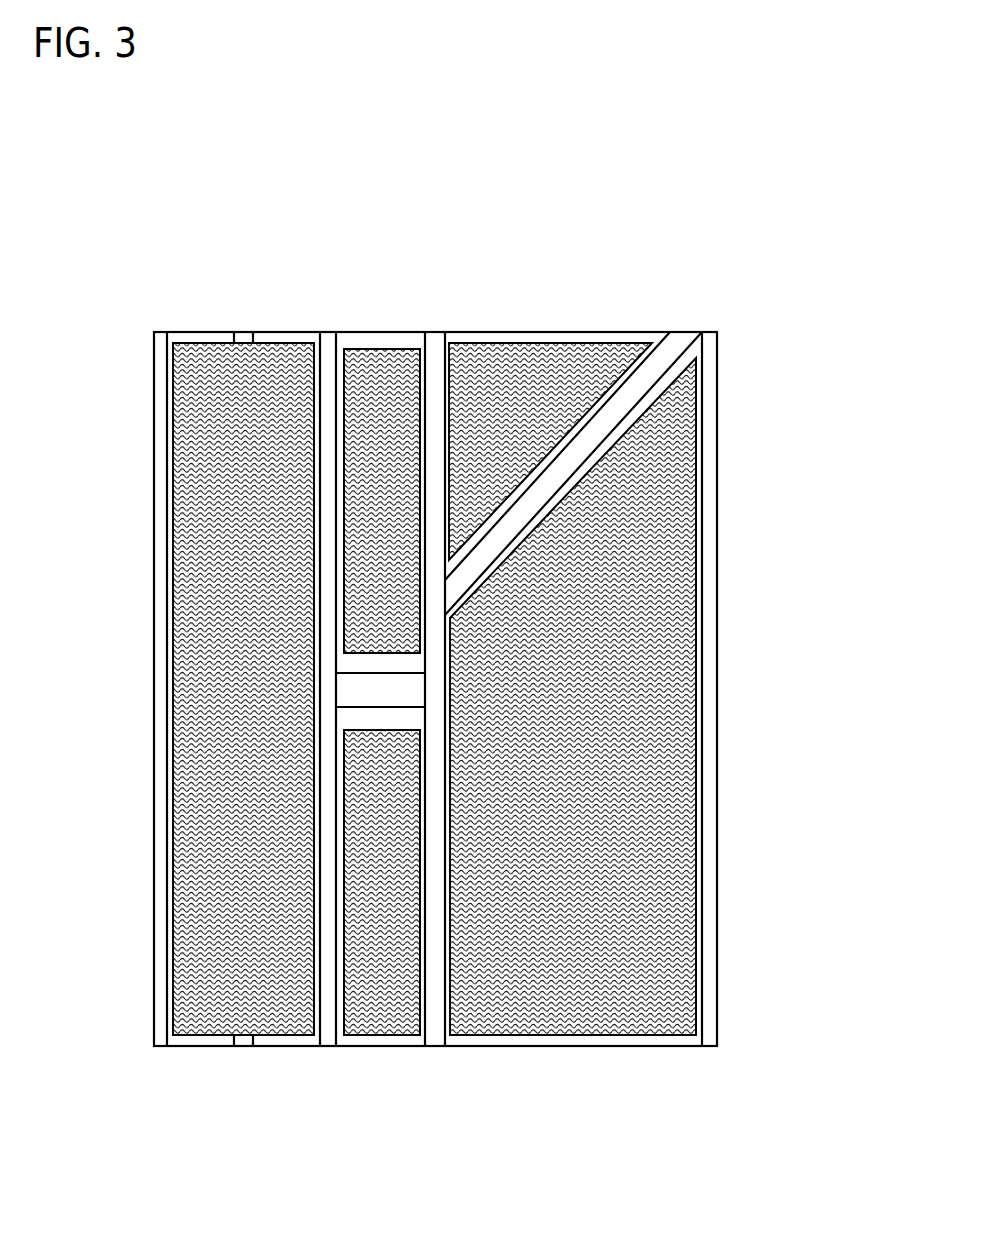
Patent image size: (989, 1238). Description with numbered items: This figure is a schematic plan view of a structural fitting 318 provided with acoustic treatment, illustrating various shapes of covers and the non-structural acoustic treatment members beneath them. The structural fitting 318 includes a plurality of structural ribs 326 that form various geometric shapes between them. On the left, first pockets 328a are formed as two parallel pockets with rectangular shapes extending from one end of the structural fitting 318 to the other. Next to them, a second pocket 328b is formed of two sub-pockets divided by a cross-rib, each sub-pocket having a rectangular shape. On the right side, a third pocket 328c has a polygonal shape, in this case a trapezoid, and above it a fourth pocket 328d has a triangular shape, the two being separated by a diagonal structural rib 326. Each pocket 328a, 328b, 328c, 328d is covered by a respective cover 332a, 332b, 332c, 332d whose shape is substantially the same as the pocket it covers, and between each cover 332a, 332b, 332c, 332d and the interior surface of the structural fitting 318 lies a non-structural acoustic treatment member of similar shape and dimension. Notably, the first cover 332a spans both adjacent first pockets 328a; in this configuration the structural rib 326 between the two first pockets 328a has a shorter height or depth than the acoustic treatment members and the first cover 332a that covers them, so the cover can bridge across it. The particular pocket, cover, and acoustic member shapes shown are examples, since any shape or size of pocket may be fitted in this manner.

The structural fitting 318 is at (780, 304).
The structural ribs 326 is at (164, 340).
The first pockets 328a is at (208, 322).
The second pocket 328b is at (380, 322).
The third pocket 328c is at (619, 1052).
The fourth pocket 328d is at (557, 322).
The first cover 332a is at (275, 1013).
The second cover 332b is at (407, 350).
The third cover 332c is at (675, 673).
The fourth cover 332d is at (506, 365).